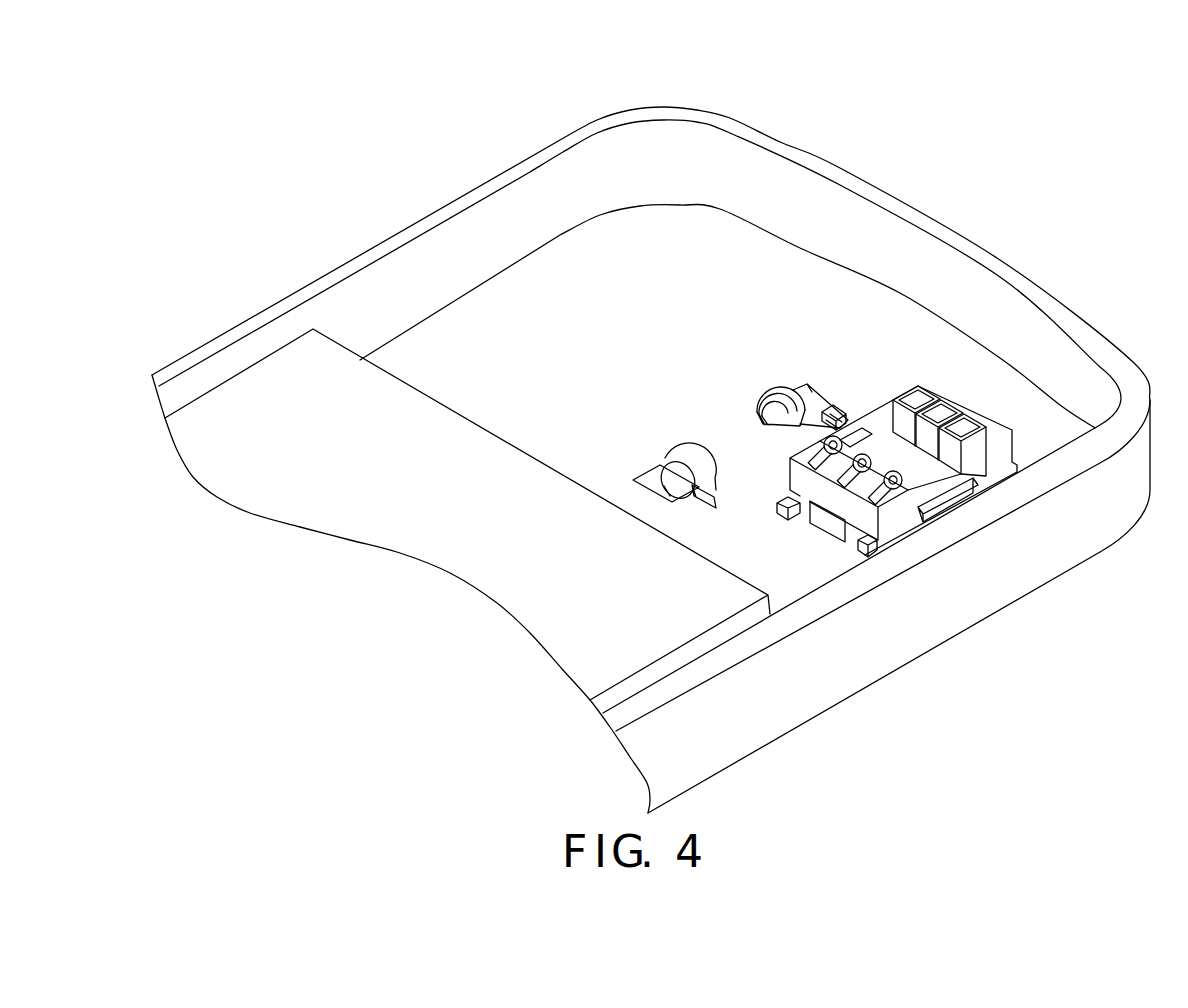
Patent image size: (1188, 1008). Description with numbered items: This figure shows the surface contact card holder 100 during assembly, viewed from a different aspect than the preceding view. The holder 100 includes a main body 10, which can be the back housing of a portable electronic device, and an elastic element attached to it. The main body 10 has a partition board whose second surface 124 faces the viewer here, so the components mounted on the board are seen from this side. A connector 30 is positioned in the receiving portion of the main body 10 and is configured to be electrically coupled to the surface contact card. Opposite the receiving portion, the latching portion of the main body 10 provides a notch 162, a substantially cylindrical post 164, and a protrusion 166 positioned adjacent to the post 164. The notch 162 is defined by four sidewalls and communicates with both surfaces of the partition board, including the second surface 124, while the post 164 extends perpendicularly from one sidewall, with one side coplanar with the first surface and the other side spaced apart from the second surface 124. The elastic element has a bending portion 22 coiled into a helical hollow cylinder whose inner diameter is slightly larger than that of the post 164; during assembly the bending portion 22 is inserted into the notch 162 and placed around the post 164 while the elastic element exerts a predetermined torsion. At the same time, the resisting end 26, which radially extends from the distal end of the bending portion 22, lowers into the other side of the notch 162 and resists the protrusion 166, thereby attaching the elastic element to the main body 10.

The surface contact card holder 100 is at (781, 78).
The main body 10 is at (651, 460).
The second surface 124 is at (448, 360).
The notch 162 is at (650, 482).
The post 164 is at (675, 477).
The bending portion 22 is at (785, 383).
The resisting end 26 is at (822, 426).
The protrusion 166 is at (835, 416).
The connector 30 is at (925, 481).